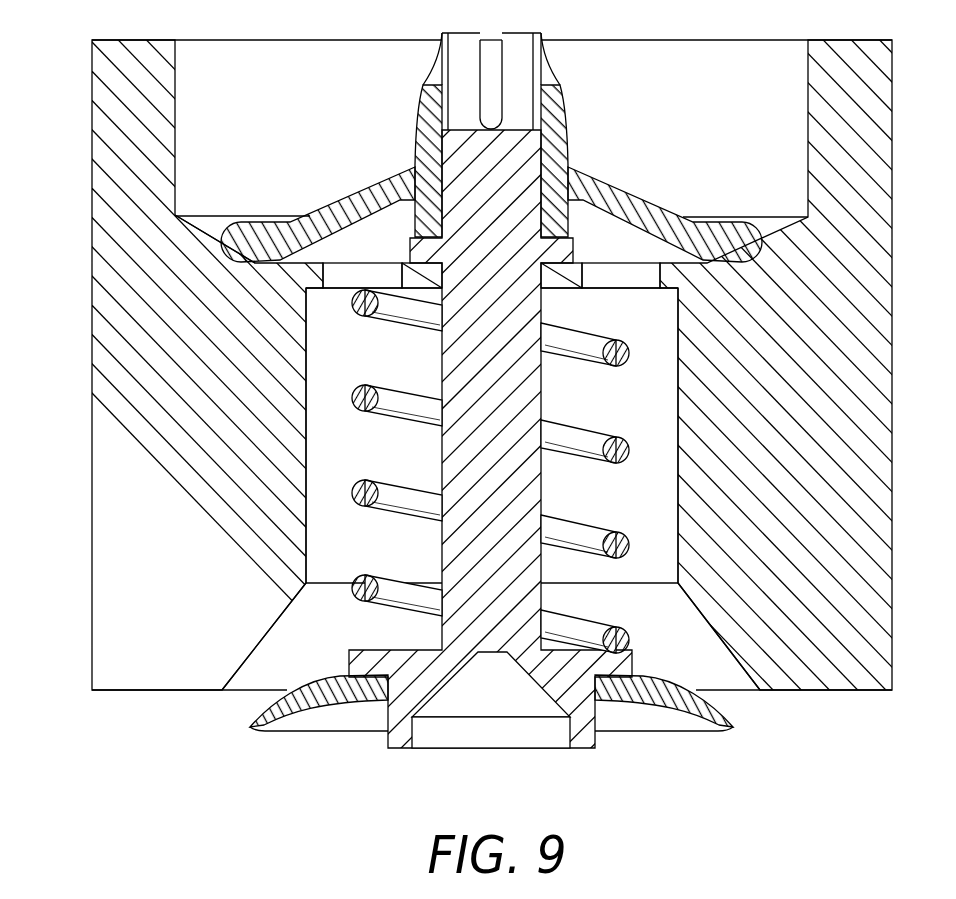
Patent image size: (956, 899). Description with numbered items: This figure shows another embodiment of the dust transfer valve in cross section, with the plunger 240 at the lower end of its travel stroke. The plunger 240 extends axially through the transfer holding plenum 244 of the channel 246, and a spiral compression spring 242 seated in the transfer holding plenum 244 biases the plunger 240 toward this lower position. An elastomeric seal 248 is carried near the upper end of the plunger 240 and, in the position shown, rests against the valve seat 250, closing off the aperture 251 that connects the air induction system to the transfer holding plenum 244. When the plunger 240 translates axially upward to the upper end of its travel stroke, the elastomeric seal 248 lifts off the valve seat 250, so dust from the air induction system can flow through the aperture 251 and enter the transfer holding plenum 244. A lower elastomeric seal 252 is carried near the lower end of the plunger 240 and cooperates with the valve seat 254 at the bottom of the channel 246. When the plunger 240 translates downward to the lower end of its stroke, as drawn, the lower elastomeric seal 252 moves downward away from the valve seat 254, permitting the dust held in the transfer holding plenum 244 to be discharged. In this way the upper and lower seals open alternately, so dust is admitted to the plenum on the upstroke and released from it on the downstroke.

The plunger 240 is at (542, 398).
The spiral compression spring 242 is at (632, 352).
The transfer holding plenum 244 is at (333, 370).
The channel 246 is at (307, 447).
The elastomeric seal 248 is at (241, 230).
The valve seat 250 is at (200, 228).
The aperture 251 is at (337, 280).
The lower elastomeric seal 252 is at (283, 724).
The valve seat 254 is at (247, 690).